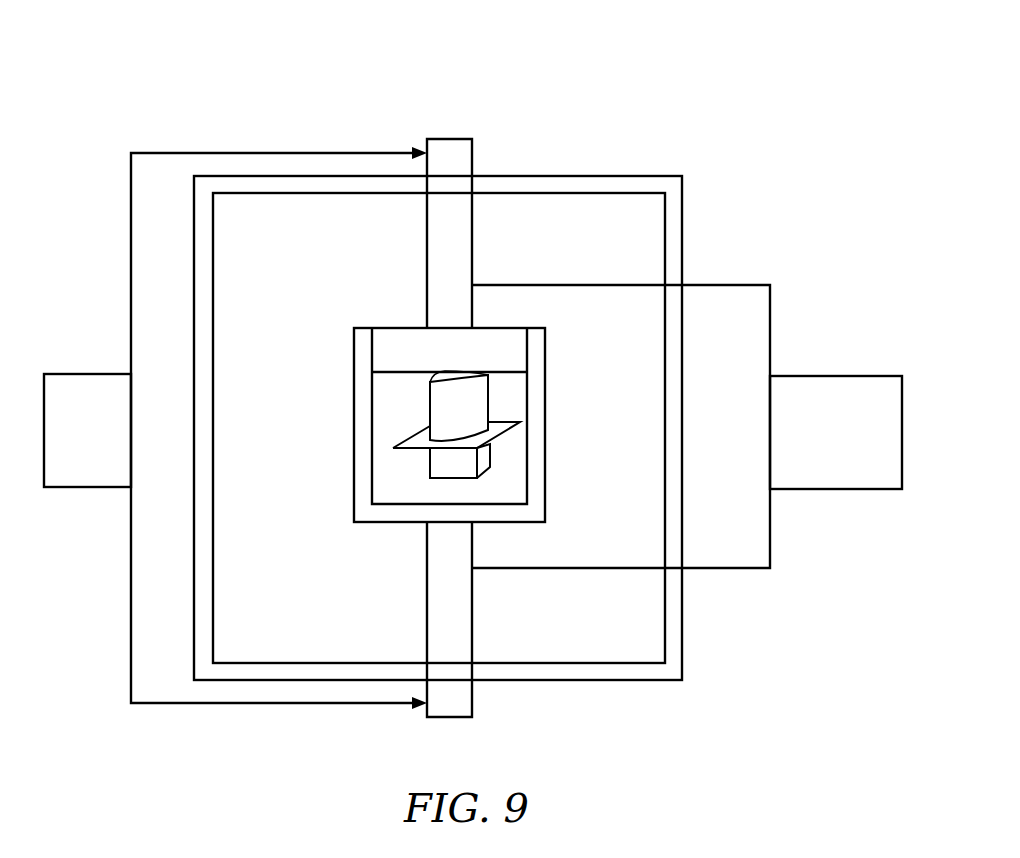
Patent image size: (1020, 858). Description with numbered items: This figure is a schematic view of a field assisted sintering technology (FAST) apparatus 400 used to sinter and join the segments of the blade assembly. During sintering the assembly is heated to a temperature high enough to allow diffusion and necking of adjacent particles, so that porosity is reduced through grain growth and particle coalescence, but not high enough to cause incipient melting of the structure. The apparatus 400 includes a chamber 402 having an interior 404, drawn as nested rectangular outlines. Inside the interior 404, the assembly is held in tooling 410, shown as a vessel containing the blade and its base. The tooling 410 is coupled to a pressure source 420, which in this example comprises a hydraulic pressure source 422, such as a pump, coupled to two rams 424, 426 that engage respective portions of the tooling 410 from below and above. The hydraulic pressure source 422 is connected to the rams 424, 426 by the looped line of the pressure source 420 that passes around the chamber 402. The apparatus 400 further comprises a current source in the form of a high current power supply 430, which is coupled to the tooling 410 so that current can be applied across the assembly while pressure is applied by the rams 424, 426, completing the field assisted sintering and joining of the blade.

The FAST apparatus 400 is at (699, 93).
The chamber 402 is at (640, 181).
The interior 404 is at (632, 246).
The tooling 410 is at (364, 530).
The pressure source 420 is at (265, 719).
The hydraulic pressure source 422 is at (110, 448).
The ram 424 is at (488, 618).
The ram 426 is at (410, 289).
The high current power supply 430 is at (861, 450).